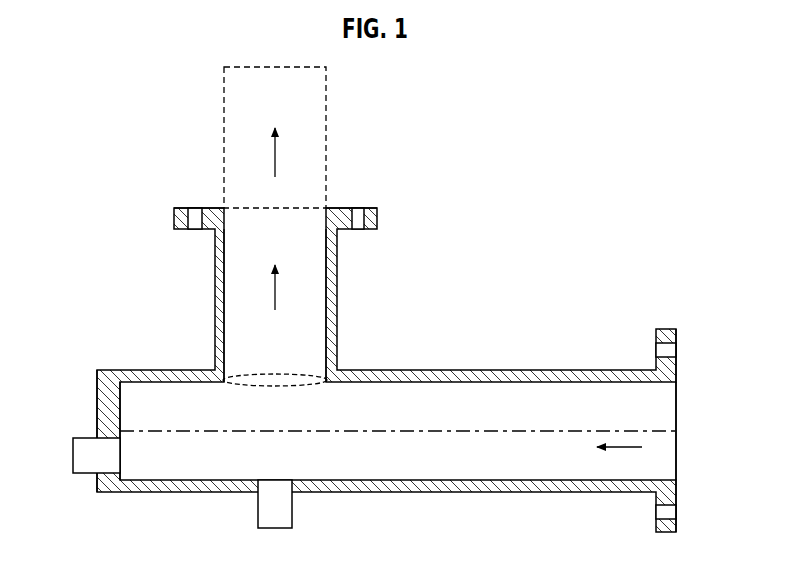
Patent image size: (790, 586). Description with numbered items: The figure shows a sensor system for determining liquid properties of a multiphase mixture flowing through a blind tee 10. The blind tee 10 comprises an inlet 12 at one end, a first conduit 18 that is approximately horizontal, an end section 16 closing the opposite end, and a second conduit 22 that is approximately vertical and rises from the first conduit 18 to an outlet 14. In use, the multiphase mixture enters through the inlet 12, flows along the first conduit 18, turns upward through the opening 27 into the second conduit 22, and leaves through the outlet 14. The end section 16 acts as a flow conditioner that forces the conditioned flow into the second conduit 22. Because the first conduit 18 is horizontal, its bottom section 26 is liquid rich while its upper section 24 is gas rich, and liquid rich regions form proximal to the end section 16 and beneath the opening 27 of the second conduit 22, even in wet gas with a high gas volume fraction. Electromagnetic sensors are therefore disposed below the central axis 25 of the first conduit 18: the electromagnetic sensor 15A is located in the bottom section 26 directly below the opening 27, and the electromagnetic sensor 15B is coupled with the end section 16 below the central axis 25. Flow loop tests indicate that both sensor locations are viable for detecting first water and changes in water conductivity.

The blind tee 10 is at (530, 238).
The inlet 12 is at (665, 329).
The outlet 14 is at (372, 208).
The electromagnetic sensor 15A is at (283, 528).
The electromagnetic sensor 15B is at (73, 460).
The end section 16 is at (97, 396).
The first conduit 18 is at (496, 370).
The second conduit 22 is at (337, 313).
The upper section 24 is at (426, 415).
The central axis 25 is at (565, 430).
The bottom section 26 is at (469, 466).
The opening 27 is at (250, 378).